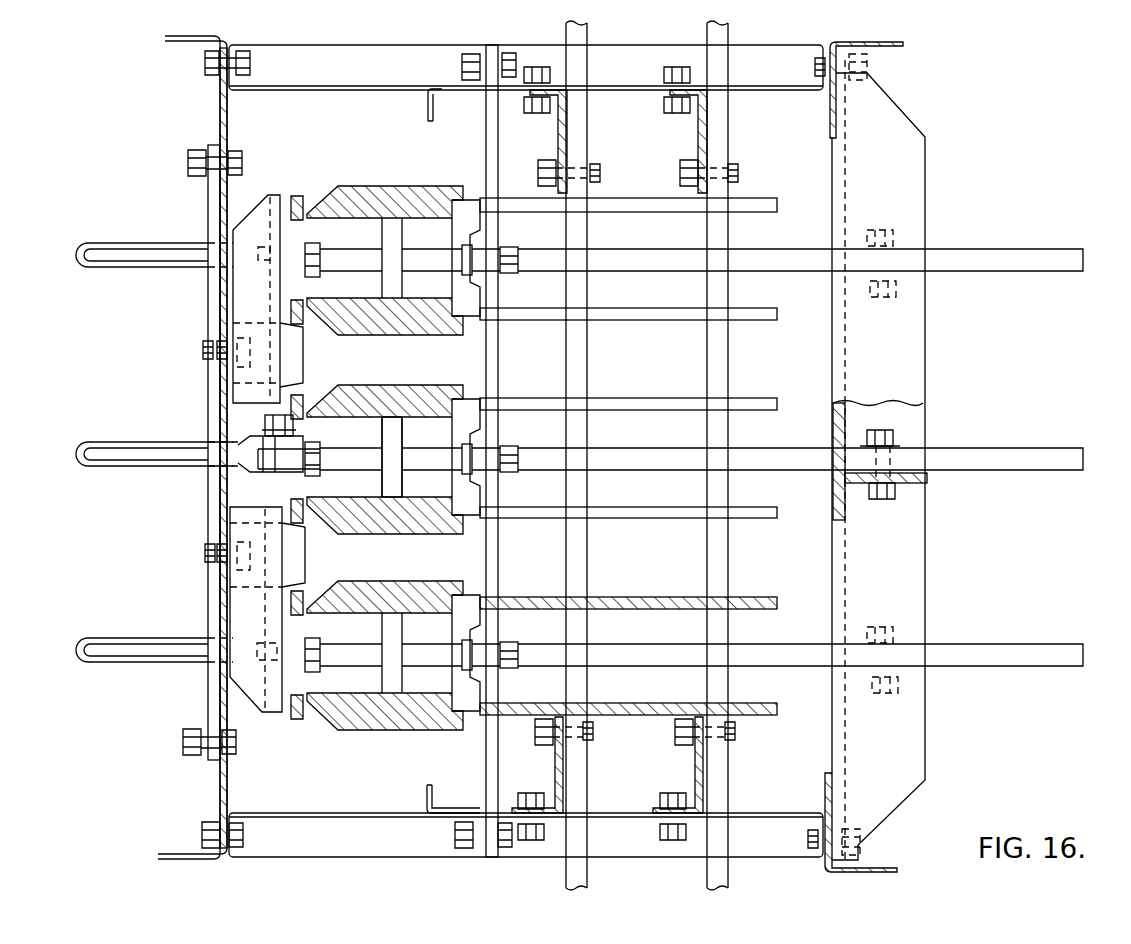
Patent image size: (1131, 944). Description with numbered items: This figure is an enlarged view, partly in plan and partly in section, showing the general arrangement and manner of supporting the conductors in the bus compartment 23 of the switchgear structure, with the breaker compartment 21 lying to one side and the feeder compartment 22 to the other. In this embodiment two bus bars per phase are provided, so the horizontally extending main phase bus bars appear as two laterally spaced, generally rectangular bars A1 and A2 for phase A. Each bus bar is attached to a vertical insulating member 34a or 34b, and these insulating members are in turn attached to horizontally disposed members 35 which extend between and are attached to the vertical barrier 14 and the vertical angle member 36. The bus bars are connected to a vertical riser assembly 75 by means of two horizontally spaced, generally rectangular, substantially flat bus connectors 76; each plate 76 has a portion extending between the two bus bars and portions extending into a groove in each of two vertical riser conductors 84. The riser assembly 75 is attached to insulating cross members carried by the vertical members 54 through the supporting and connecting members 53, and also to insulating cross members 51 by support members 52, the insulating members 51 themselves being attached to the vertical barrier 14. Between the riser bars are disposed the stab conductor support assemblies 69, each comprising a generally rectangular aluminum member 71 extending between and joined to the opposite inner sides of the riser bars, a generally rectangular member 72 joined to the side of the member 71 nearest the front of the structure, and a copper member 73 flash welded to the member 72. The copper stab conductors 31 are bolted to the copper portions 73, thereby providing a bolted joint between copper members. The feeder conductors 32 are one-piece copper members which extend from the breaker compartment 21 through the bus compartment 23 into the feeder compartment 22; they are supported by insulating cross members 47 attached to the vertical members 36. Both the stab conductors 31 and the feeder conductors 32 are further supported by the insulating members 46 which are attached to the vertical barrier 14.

The vertical barrier 14 is at (220, 103).
The breaker compartment 21 is at (131, 356).
The feeder compartment 22 is at (979, 383).
The bus compartment 23 is at (611, 124).
The stab conductor 31 is at (143, 245).
The feeder conductor 32 is at (1025, 251).
The insulating support member 34a is at (556, 760).
The insulating support member 34b is at (696, 762).
The horizontally disposed member 35 is at (388, 50).
The vertical angle member 36 is at (830, 115).
The insulating member 46 is at (208, 196).
The insulating cross member 47 is at (917, 752).
The insulating cross member 51 is at (263, 206).
The support member 52 is at (296, 196).
The supporting and connecting member 53 is at (476, 196).
The vertical member 54 is at (428, 108).
The stab conductor support assembly 69 is at (416, 444).
The generally rectangular member 71 is at (382, 481).
The generally rectangular member 72 is at (358, 449).
The copper member 73 is at (300, 448).
The riser assembly 75 is at (335, 638).
The bus connector 76 is at (655, 198).
The vertical riser conductor 84 is at (394, 186).
The phase bus bar A1 is at (585, 560).
The phase bus bar A2 is at (728, 552).